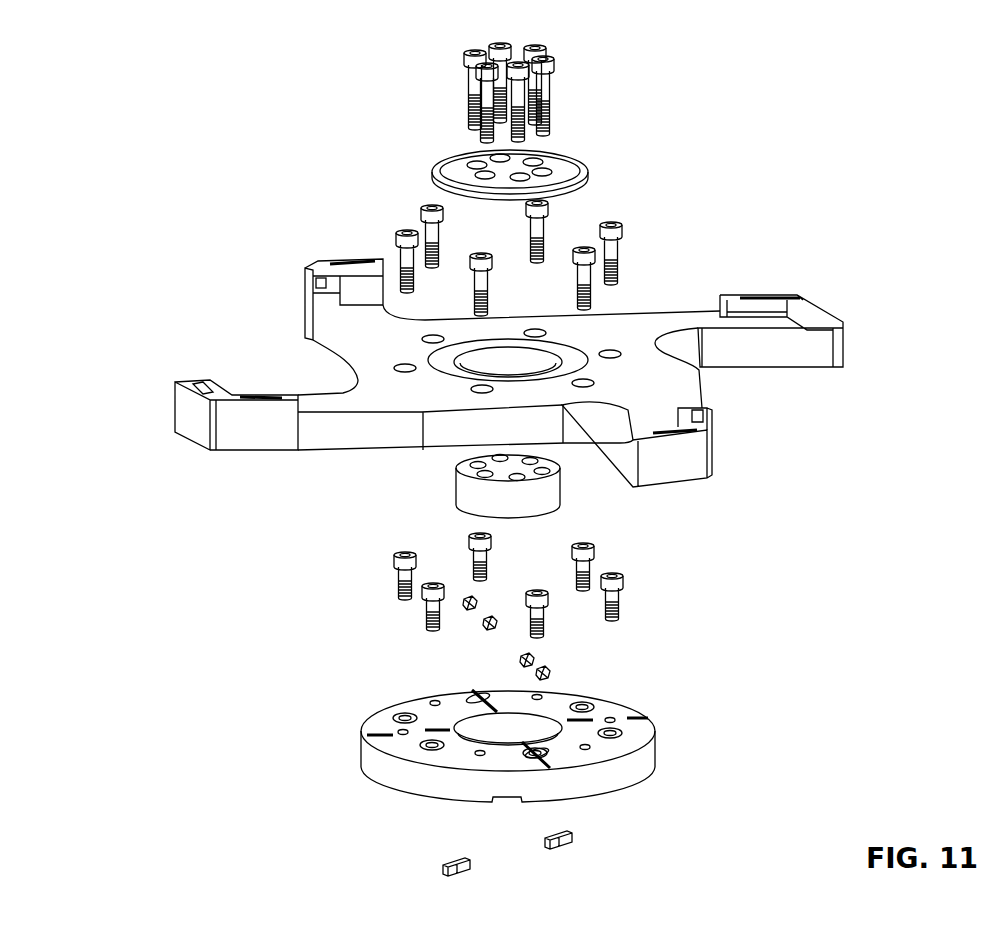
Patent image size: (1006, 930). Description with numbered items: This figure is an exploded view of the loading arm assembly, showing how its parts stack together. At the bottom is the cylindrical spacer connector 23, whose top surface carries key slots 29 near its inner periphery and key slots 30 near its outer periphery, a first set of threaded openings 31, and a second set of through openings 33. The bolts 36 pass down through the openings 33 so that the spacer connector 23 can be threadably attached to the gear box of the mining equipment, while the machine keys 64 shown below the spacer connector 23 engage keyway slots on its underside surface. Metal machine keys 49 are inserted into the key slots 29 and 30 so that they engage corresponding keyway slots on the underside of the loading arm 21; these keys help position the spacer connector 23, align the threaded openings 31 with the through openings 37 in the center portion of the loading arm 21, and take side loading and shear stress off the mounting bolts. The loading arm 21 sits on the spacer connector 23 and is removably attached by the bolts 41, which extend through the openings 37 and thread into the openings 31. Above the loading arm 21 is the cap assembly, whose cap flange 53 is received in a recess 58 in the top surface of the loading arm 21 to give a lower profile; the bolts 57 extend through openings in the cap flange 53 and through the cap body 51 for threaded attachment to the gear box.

The loading arm 21 is at (509, 369).
The spacer connector 23 is at (488, 741).
The key slots 29 is at (433, 729).
The key slots 30 is at (368, 736).
The threaded openings 31 is at (588, 749).
The openings 33 is at (418, 748).
The bolt 36 is at (619, 597).
The through openings 37 is at (395, 371).
The bolts 41 is at (622, 243).
The machine keys 49 is at (551, 675).
The cap body 51 is at (553, 490).
The cap flange 53 is at (583, 178).
The bolts 57 is at (555, 82).
The recess 58 is at (668, 350).
The machine keys 64 is at (561, 846).